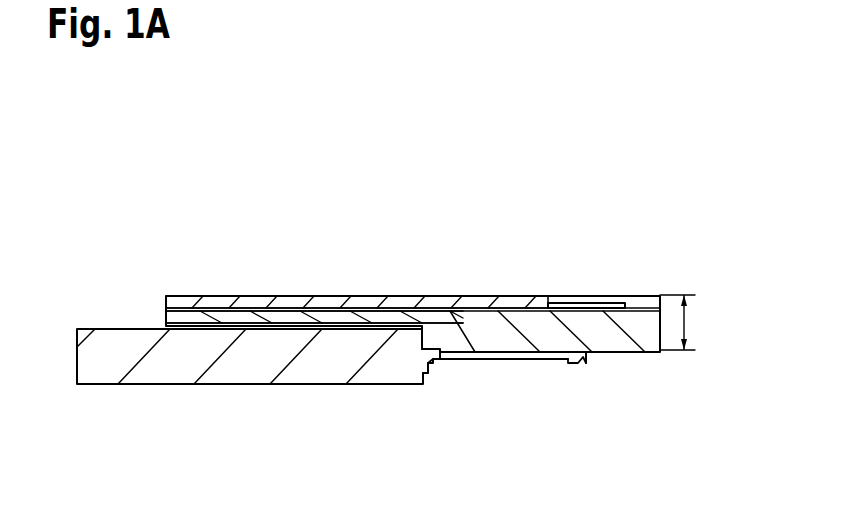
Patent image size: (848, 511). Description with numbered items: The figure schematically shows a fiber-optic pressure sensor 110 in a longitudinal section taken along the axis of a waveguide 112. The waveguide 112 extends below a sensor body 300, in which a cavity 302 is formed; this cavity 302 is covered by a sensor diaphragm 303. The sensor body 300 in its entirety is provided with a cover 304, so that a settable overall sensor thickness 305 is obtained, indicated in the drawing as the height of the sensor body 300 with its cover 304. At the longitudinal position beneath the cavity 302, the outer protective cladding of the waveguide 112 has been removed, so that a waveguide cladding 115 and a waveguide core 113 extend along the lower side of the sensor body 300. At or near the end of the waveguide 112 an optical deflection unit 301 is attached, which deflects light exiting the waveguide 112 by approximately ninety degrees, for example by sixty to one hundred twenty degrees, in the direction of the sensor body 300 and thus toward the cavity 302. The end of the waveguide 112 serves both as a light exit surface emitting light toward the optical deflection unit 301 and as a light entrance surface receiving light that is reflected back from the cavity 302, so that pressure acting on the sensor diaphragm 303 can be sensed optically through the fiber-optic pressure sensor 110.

The fiber-optic pressure sensor 110 is at (287, 222).
The waveguide 112 is at (240, 375).
The waveguide core 113 is at (508, 362).
The waveguide cladding 115 is at (432, 367).
The sensor body 300 is at (648, 345).
The optical deflection unit 301 is at (585, 365).
The cavity 302 is at (570, 303).
The sensor diaphragm 303 is at (372, 303).
The cover 304 is at (457, 300).
The overall sensor thickness 305 is at (685, 325).